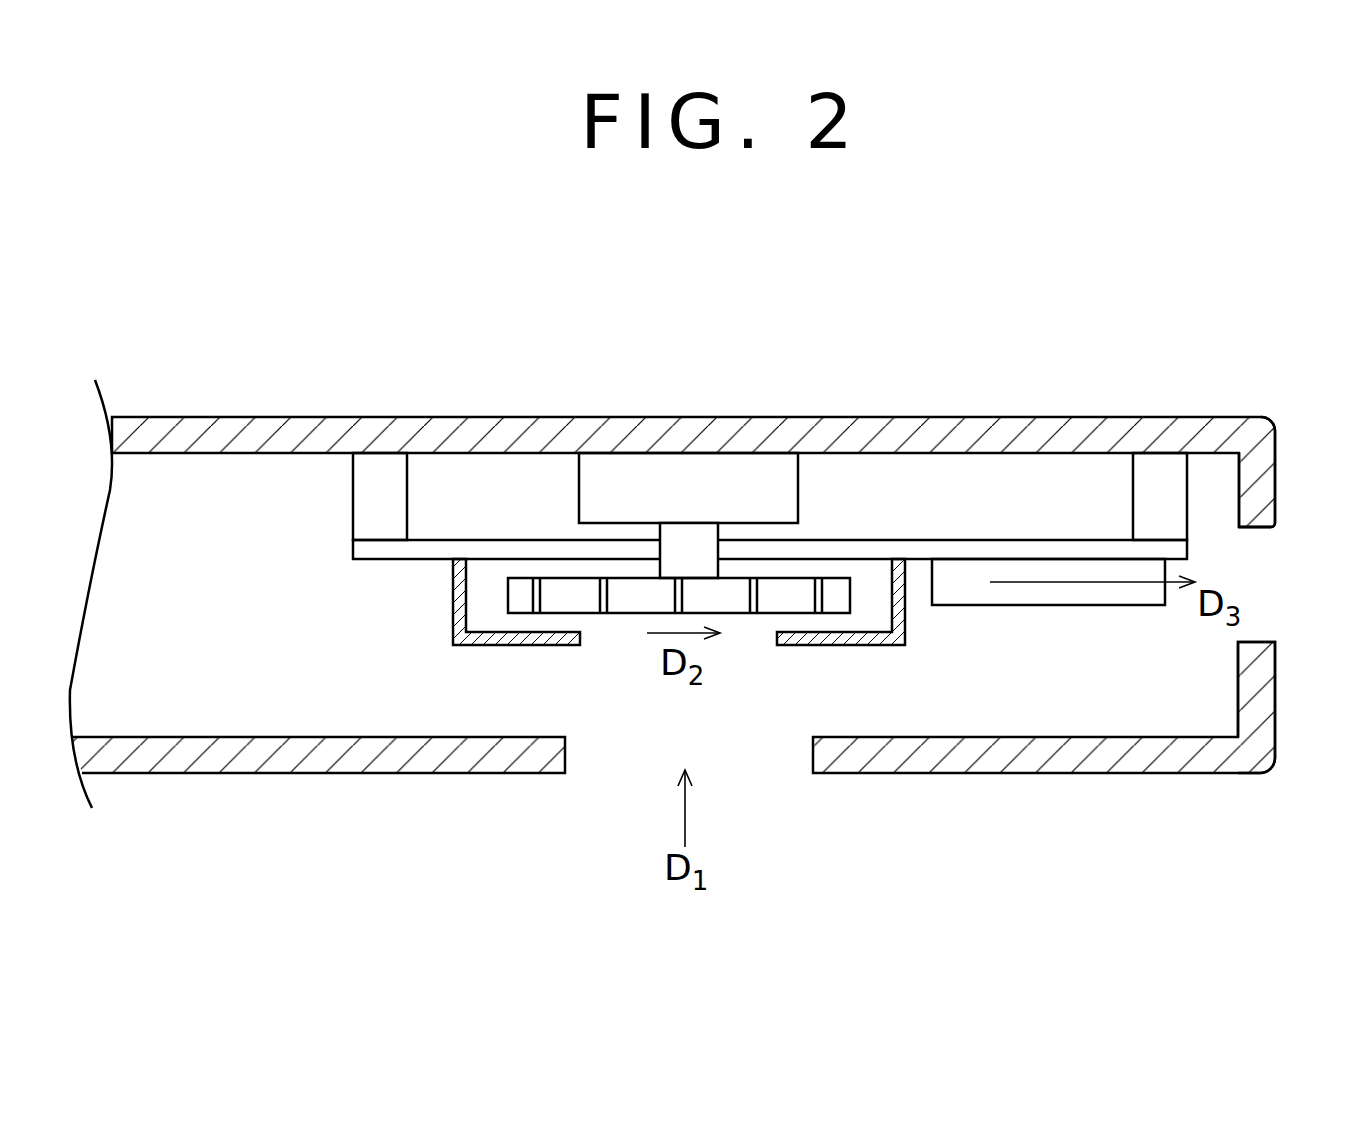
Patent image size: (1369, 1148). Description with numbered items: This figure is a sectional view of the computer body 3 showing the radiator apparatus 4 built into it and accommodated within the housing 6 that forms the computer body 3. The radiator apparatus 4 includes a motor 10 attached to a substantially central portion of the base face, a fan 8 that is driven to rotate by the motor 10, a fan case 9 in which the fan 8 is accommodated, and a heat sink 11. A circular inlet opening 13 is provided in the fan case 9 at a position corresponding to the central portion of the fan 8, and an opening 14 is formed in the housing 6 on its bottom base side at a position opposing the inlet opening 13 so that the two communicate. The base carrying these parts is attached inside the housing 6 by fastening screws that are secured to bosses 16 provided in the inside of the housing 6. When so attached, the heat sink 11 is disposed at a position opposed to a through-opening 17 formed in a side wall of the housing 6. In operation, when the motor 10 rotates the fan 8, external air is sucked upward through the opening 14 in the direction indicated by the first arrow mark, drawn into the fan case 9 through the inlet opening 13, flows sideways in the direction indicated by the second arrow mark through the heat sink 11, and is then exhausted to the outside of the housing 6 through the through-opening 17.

The computer body 3 is at (1222, 398).
The radiator apparatus 4 is at (653, 505).
The housing 6 is at (1264, 470).
The fan 8 is at (521, 603).
The fan case 9 is at (832, 645).
The motor 10 is at (840, 477).
The heat sink 11 is at (977, 592).
The inlet opening 13 is at (580, 645).
The opening 14 is at (811, 754).
The bosses 16 is at (366, 513).
The through-opening 17 is at (1258, 529).